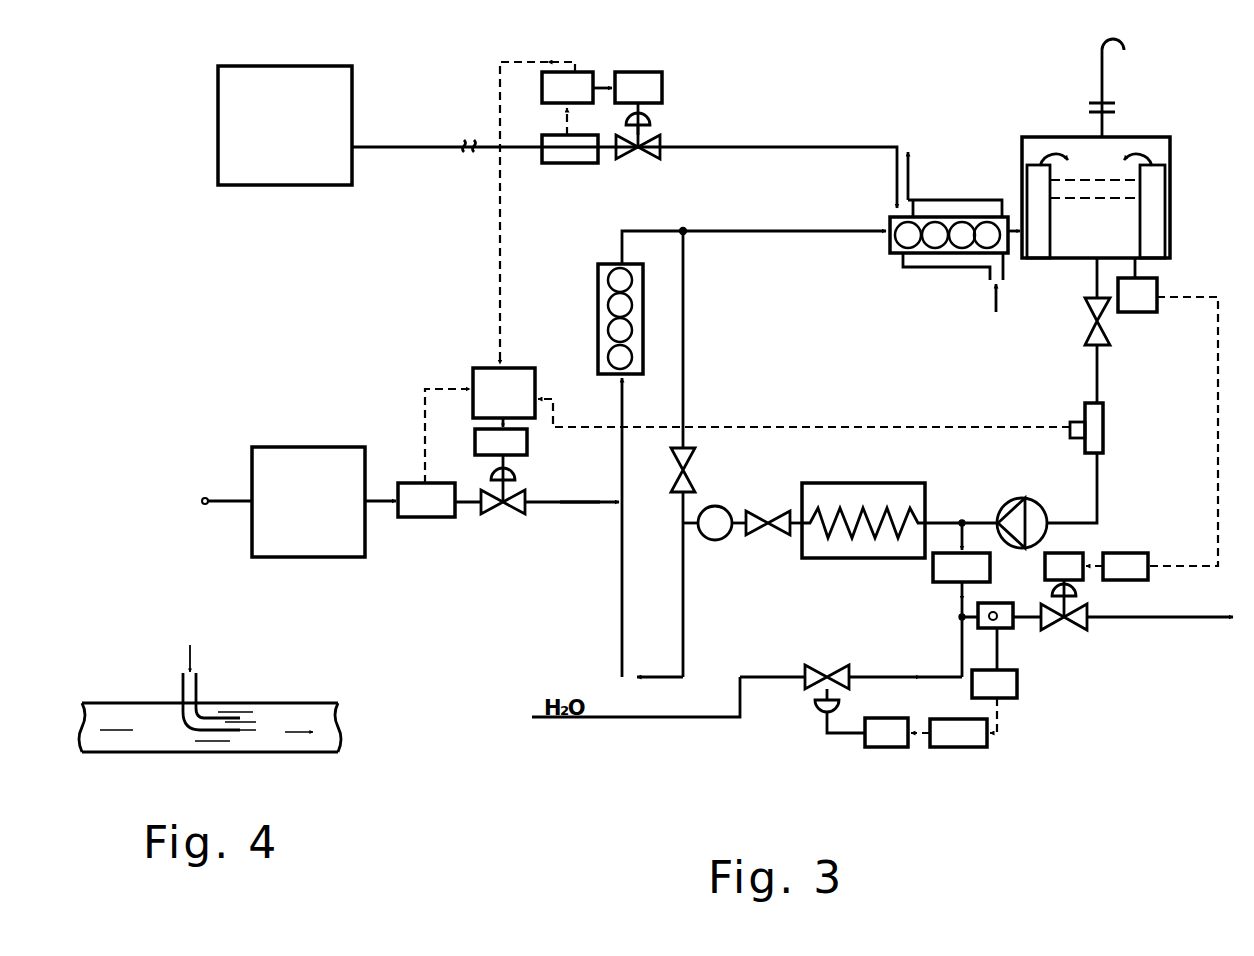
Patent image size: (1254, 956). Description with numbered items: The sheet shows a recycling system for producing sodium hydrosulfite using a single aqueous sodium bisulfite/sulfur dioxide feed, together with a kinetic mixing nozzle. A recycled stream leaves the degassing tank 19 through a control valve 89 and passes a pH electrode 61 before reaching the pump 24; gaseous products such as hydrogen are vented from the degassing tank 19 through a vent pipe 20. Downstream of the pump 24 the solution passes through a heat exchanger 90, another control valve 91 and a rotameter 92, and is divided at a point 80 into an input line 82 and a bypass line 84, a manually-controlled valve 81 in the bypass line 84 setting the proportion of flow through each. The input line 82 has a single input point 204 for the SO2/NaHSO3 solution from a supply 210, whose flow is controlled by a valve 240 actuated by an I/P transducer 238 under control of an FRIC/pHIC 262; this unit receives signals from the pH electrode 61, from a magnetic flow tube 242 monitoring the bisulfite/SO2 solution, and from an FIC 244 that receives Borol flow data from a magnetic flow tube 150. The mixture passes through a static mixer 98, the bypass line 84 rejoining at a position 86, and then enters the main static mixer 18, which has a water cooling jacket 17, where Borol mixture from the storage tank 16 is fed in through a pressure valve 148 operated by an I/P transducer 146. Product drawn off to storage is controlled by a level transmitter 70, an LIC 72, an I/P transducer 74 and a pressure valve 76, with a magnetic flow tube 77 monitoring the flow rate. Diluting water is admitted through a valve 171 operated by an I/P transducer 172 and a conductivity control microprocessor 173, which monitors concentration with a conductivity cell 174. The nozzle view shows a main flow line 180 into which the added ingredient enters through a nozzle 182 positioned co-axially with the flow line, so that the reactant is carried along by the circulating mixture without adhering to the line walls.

In FIG. 3, the storage tank 16 is at (224, 107).
In FIG. 3, the FIC 244 is at (583, 72).
In FIG. 3, the I/P transducer 146 is at (662, 86).
In FIG. 3, the MFT 150 is at (563, 163).
In FIG. 3, the pressure valve 148 is at (641, 160).
In FIG. 3, the position 86 is at (686, 230).
In FIG. 3, the second flow line 84 is at (685, 323).
In FIG. 3, the static mixer 98 is at (598, 280).
In FIG. 3, the water cooling jacket 17 is at (965, 200).
In FIG. 3, the static mixer 18 is at (935, 222).
In FIG. 3, the degassing tank 19 is at (1160, 214).
In FIG. 3, the vent pipe 20 is at (1104, 85).
In FIG. 3, the level transmitter 70 is at (1157, 297).
In FIG. 3, the control valve 89 is at (1085, 326).
In FIG. 3, the pH electrode 61 is at (1103, 452).
In FIG. 3, the FRIC/pHIC 262 is at (525, 368).
In FIG. 3, the I/P transducer 238 is at (527, 447).
In FIG. 3, the valve 240 is at (506, 514).
In FIG. 3, the magnetic flow tube 242 is at (432, 517).
In FIG. 3, the supply 210 is at (258, 535).
In FIG. 3, the input point 204 is at (624, 504).
In FIG. 3, the manually-controlled valve 81 is at (672, 463).
In FIG. 3, the point 80 is at (681, 527).
In FIG. 3, the rotameter 92 is at (714, 541).
In FIG. 3, the control valve 91 is at (770, 536).
In FIG. 3, the heat exchanger 90 is at (867, 483).
In FIG. 3, the pump 24 is at (1015, 506).
In FIG. 3, the magnetic flow tube 77 is at (950, 582).
In FIG. 3, the I/P transducer 74 is at (1067, 549).
In FIG. 3, the LIC 72 is at (1123, 553).
In FIG. 3, the pressure valve 76 is at (1061, 630).
In FIG. 3, the conductivity cell 174 is at (1017, 680).
In FIG. 3, the conductivity control microprocessor 173 is at (963, 747).
In FIG. 3, the I/P transducer 172 is at (872, 747).
In FIG. 3, the valve 171 is at (832, 662).
In FIG. 3, the first flow line 82 is at (685, 632).
In FIG. 4, the main flow line 180 is at (98, 722).
In FIG. 4, the nozzle 182 is at (198, 693).